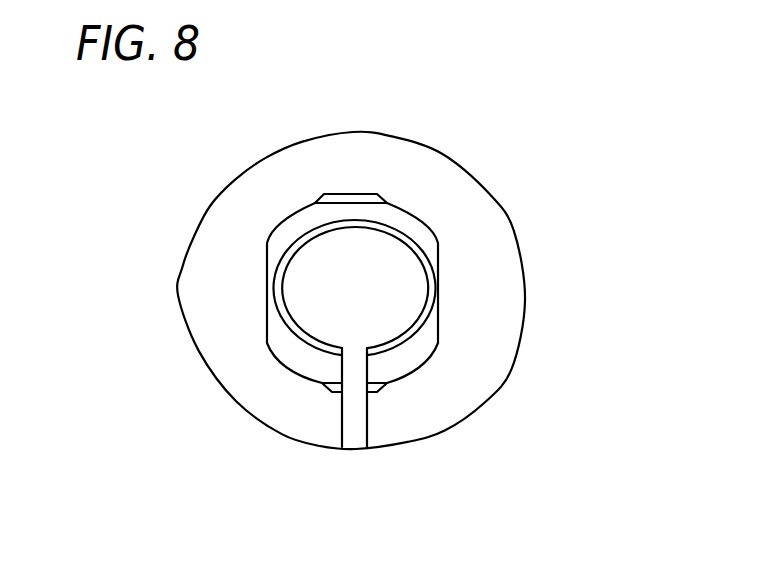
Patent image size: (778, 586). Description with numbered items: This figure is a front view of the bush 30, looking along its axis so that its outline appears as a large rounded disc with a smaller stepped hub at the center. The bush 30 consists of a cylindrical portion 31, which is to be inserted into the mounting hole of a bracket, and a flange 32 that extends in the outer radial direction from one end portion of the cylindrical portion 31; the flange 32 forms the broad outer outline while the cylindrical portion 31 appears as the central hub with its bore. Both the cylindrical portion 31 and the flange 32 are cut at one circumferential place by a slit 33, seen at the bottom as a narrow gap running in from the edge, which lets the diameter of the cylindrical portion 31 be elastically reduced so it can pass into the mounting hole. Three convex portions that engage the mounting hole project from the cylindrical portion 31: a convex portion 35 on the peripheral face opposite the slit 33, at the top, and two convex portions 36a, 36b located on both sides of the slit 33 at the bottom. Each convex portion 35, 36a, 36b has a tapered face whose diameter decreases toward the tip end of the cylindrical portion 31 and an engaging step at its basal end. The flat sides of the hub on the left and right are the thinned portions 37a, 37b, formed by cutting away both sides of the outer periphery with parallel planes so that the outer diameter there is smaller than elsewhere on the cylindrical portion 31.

The bush 30 is at (556, 221).
The cylindrical portion 31 is at (420, 364).
The flange 32 is at (180, 297).
The slit 33 is at (355, 440).
The convex portion 35 is at (351, 193).
The convex portion 36a is at (376, 394).
The convex portion 36b is at (332, 393).
The thinned portion 37a is at (438, 255).
The thinned portion 37b is at (264, 284).